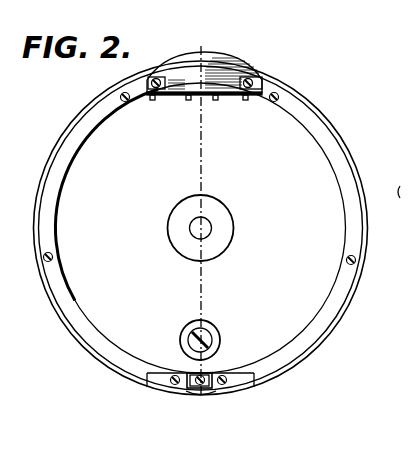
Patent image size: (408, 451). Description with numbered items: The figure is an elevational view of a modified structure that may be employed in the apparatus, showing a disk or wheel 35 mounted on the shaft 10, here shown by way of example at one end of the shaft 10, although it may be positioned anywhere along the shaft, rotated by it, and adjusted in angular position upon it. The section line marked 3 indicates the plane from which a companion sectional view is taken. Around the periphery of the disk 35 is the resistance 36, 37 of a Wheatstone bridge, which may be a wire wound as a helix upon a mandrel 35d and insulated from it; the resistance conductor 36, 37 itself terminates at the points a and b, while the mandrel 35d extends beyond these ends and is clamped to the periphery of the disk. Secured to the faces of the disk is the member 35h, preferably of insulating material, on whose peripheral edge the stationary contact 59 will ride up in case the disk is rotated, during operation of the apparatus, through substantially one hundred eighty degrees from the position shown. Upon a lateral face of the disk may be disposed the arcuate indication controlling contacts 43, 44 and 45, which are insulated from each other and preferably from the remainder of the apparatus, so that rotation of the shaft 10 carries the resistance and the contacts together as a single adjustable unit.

The section line 3- 3 is at (130, 398).
The shaft 10 is at (212, 226).
The second wheel or disk 35 is at (395, 144).
The mandrel 35d is at (143, 73).
The insulating member 35h is at (236, 60).
The resistance 36 is at (72, 334).
The resistance 37 is at (360, 290).
The indication controlling contact 43 is at (88, 125).
The indication controlling contact 44 is at (208, 372).
The indication controlling contact 45 is at (323, 323).
The stationary contact 59 is at (147, 397).
The resistance conductor terminal a is at (140, 76).
The resistance conductor terminal b is at (272, 82).